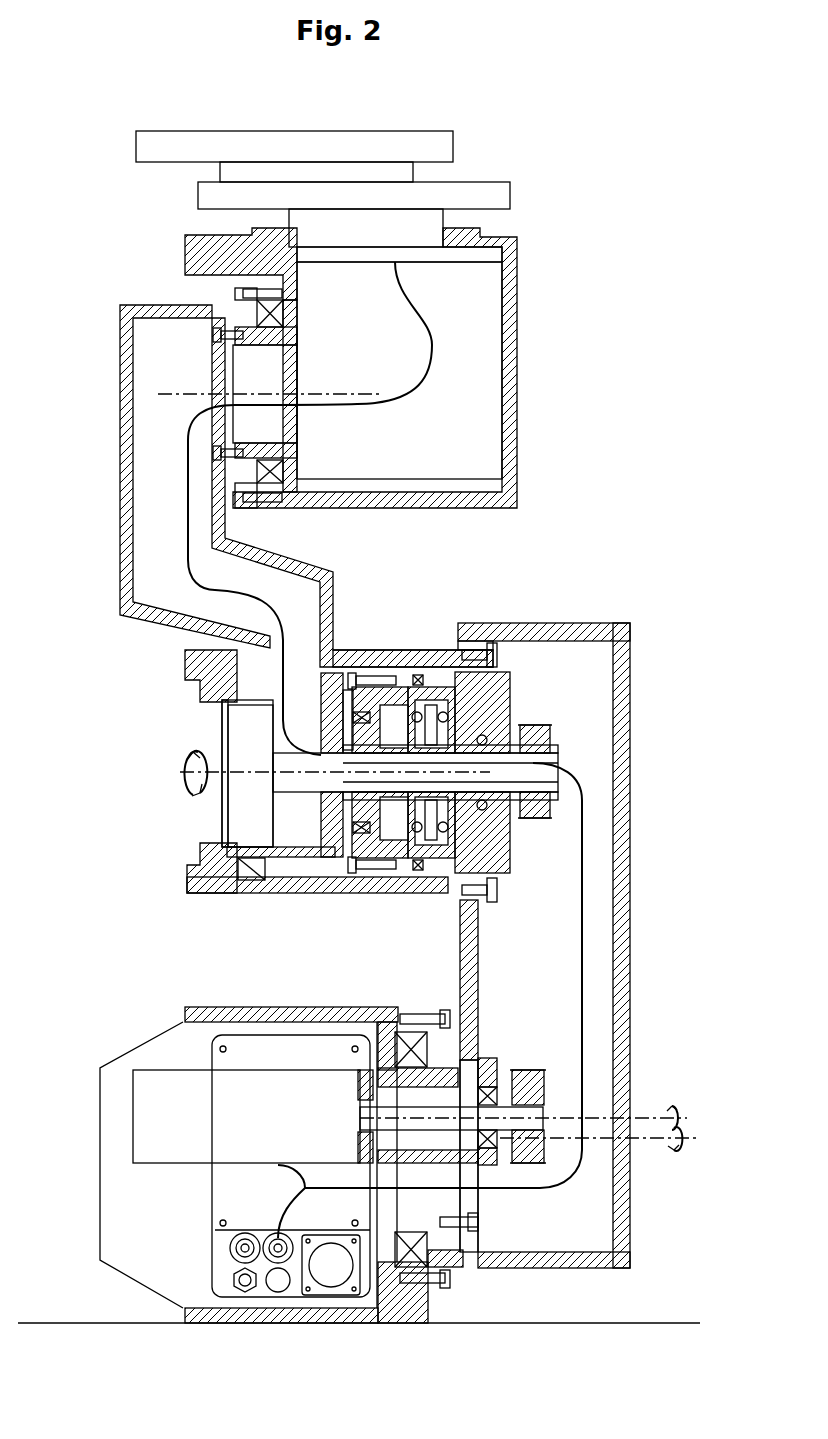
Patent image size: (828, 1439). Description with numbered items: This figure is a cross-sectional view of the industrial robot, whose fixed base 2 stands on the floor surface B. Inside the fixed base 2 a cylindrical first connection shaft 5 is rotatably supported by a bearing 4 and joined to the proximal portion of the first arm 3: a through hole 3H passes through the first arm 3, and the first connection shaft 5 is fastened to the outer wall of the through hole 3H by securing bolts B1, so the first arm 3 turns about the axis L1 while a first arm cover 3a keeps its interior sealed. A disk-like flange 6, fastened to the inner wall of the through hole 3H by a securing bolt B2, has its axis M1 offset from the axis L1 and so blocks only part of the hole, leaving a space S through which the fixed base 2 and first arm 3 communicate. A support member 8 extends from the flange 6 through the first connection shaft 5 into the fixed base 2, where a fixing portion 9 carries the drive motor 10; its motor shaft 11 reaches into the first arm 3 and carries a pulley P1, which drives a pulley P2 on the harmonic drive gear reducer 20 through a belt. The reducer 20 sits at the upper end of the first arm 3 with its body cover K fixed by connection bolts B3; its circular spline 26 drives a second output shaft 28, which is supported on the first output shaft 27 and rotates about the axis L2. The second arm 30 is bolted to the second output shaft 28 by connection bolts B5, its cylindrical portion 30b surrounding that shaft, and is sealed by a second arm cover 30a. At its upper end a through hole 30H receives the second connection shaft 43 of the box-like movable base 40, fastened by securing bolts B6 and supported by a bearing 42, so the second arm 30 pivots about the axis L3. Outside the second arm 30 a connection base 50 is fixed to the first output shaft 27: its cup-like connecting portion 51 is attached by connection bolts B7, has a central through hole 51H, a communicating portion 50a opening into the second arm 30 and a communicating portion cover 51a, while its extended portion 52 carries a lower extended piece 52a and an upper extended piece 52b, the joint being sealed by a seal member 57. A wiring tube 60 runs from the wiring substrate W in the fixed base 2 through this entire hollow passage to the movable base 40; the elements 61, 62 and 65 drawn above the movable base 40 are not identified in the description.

The fixed base 2 is at (340, 1007).
The first arm 3 is at (576, 945).
The first arm cover 3a is at (630, 818).
The through hole 3H is at (462, 1205).
The bearing 4 is at (400, 1022).
The first connection shaft 5 is at (465, 1264).
The flange 6 is at (482, 1058).
The support member 8 is at (360, 1147).
The fixing portion 9 is at (360, 1084).
The drive motor 10 is at (128, 1163).
The motor shaft 11 is at (368, 1117).
The harmonic drive gear reducer 20 is at (526, 699).
The circular spline 26 is at (430, 873).
The first output shaft 27 is at (322, 805).
The second output shaft 28 is at (343, 702).
The second arm 30 is at (282, 568).
The second arm cover 30a is at (120, 437).
The cylindrical portion 30b is at (395, 650).
The through hole 30H is at (265, 394).
The movable base 40 is at (517, 300).
The bearing 42 is at (283, 313).
The second connection shaft 43 is at (268, 345).
The connection base 50 is at (216, 778).
The communicating portion 50a is at (276, 781).
The connecting portion 51 is at (322, 832).
The communicating portion cover 51a is at (222, 722).
The through hole 51H is at (326, 784).
The extended portion 52 is at (172, 771).
The lower extended piece 52a is at (200, 862).
The upper extended piece 52b is at (190, 690).
The seal member 57 is at (245, 880).
The wiring tube 60 is at (437, 333).
The table unit 61 is at (355, 162).
The lower table plate 62 is at (510, 195).
The upper table plate 65 is at (425, 131).
The floor surface B is at (359, 1300).
The securing bolts B1 is at (498, 1240).
The securing bolt B2 is at (497, 1085).
The connection bolts B3 is at (500, 655).
The connection bolts B5 is at (368, 676).
The securing bolts B6 is at (213, 336).
The connection bolts B7 is at (353, 718).
The body cover K is at (455, 662).
The axis L1 is at (690, 1152).
The axis L2 is at (238, 770).
The axis L3 is at (352, 393).
The axis M1 is at (666, 1102).
The pulley P1 is at (540, 1072).
The pulley P2 is at (550, 740).
The space S is at (378, 1178).
The wiring substrate W is at (212, 1258).